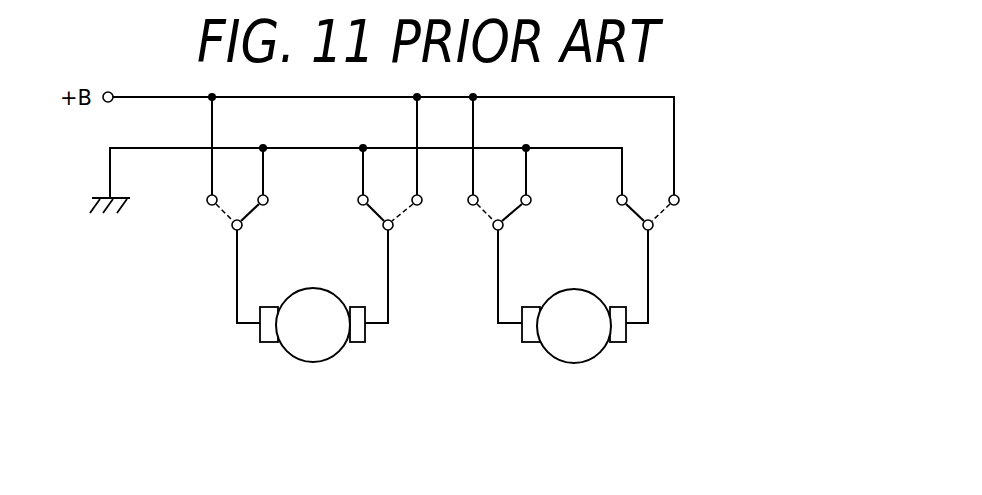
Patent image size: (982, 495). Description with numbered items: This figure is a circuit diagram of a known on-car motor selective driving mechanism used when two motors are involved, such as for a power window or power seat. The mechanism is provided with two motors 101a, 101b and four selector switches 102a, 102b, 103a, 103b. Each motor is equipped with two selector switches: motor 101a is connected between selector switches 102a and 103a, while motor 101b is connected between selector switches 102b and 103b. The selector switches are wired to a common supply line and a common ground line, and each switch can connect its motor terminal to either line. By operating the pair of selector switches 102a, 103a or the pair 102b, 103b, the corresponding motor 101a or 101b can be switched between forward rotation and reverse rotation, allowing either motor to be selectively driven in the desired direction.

The motor 101a is at (297, 357).
The motor 101b is at (557, 358).
The selector switch 102a is at (227, 208).
The selector switch 102b is at (487, 208).
The selector switch 103a is at (378, 208).
The selector switch 103b is at (633, 210).